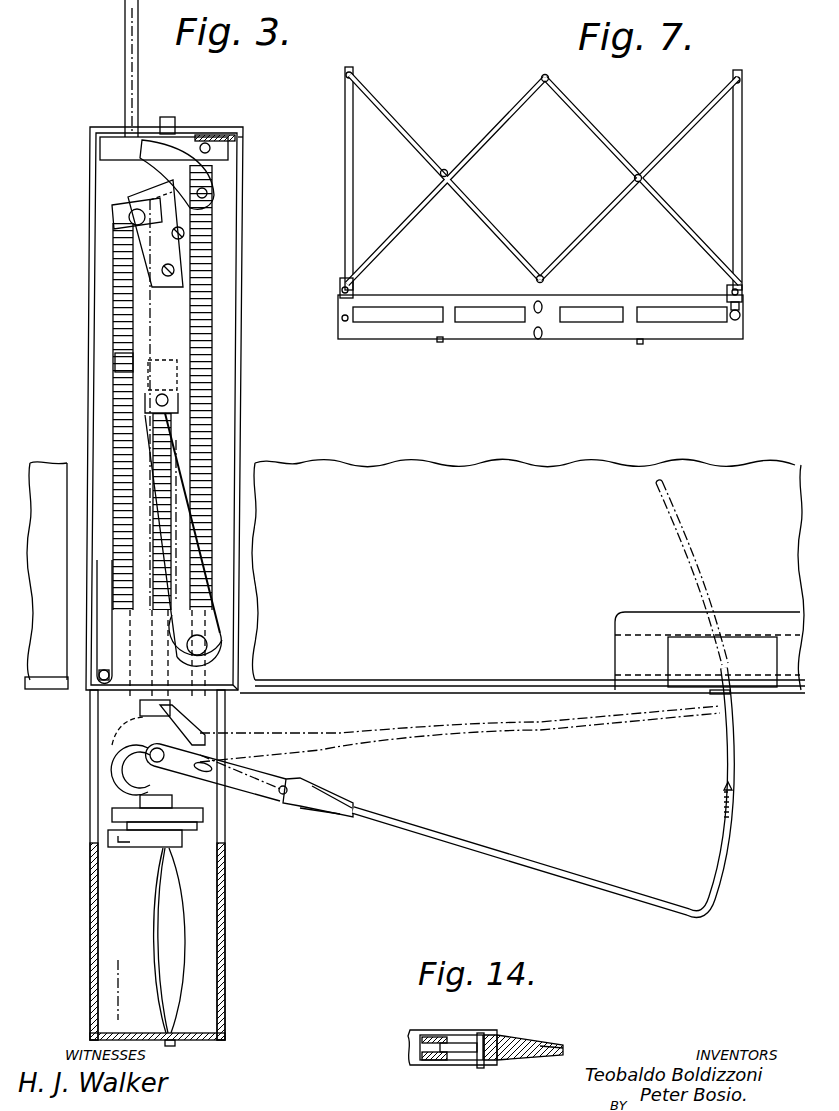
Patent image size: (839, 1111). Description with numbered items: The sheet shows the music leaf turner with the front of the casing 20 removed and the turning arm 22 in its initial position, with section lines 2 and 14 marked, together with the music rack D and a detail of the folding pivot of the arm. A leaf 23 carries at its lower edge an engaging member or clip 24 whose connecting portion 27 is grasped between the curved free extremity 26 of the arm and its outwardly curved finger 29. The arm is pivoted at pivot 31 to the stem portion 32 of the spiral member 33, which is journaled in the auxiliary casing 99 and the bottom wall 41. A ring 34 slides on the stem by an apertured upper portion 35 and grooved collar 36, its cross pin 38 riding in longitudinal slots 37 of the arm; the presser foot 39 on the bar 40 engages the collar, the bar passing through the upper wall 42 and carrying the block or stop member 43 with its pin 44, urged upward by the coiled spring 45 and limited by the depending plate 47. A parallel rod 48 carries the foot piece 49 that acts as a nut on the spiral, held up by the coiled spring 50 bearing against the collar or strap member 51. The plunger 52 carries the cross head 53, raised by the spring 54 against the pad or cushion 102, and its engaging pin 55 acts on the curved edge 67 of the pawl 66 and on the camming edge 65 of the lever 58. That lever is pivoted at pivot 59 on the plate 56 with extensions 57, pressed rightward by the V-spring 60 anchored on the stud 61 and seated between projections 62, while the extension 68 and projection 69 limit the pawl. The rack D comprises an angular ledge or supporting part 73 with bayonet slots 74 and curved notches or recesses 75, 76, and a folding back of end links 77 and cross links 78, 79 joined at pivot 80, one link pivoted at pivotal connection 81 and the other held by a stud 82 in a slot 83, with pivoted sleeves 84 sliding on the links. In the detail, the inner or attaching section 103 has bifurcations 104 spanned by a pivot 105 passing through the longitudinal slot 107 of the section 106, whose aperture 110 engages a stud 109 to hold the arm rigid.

In FIG. 3, the section line 2 is at (111, 519).
In FIG. 3, the section line 14 is at (283, 781).
In FIG. 3, the casing 20 is at (90, 300).
In FIG. 3, the turning arm 22 is at (490, 730).
In FIG. 14, the turning arm 22 is at (562, 1044).
In FIG. 3, the leaf 23 is at (510, 470).
In FIG. 3, the engaging member or clip 24 is at (610, 618).
In FIG. 3, the curved free extremity 26 is at (727, 672).
In FIG. 3, the connecting portion 27 is at (740, 630).
In FIG. 3, the finger 29 is at (735, 808).
In FIG. 3, the pivot 31 is at (170, 758).
In FIG. 3, the stem portion 32 is at (140, 708).
In FIG. 3, the spiral member 33 is at (170, 960).
In FIG. 3, the ring 34 is at (112, 776).
In FIG. 3, the apertured upper portion 35 is at (175, 718).
In FIG. 3, the grooved collar 36 is at (204, 816).
In FIG. 3, the longitudinal slots 37 is at (210, 765).
In FIG. 3, the cross pin 38 is at (205, 772).
In FIG. 3, the presser foot 39 is at (190, 830).
In FIG. 3, the bar 40 is at (172, 430).
In FIG. 3, the bottom wall 41 is at (236, 690).
In FIG. 3, the upper wall 42 is at (205, 136).
In FIG. 3, the block or stop member 43 is at (170, 400).
In FIG. 3, the pin 44 is at (157, 365).
In FIG. 3, the coiled spring 45 is at (175, 466).
In FIG. 3, the depending plate 47 is at (112, 732).
In FIG. 3, the rod 48 is at (130, 62).
In FIG. 3, the foot piece 49 is at (138, 847).
In FIG. 3, the coiled spring 50 is at (112, 445).
In FIG. 3, the collar or strap member 51 is at (112, 222).
In FIG. 3, the plunger 52 is at (180, 230).
In FIG. 3, the cross head 53 is at (178, 140).
In FIG. 3, the spring 54 is at (185, 238).
In FIG. 3, the engaging pin 55 is at (208, 146).
In FIG. 3, the plate 56 is at (218, 615).
In FIG. 3, the extensions 57 is at (222, 646).
In FIG. 3, the lever 58 is at (166, 405).
In FIG. 3, the pivot 59 is at (195, 636).
In FIG. 3, the V-spring 60 is at (96, 650).
In FIG. 3, the stud 61 is at (92, 690).
In FIG. 3, the projections 62 is at (115, 368).
In FIG. 3, the camming edge 65 is at (215, 320).
In FIG. 3, the pawl 66 is at (190, 190).
In FIG. 3, the curved edge 67 is at (216, 190).
In FIG. 3, the extension 68 is at (167, 117).
In FIG. 3, the projection 69 is at (174, 251).
In FIG. 7, the angular ledge or supporting part 73 is at (735, 336).
In FIG. 7, the bayonet slots 74 is at (542, 330).
In FIG. 3, the curved notch or recess 75 is at (737, 698).
In FIG. 7, the curved notch or recess 75 is at (640, 344).
In FIG. 7, the curved notch or recess 76 is at (440, 342).
In FIG. 7, the end links 77 is at (354, 180).
In FIG. 7, the cross links 78 is at (553, 255).
In FIG. 7, the cross links 79 is at (574, 112).
In FIG. 7, the pivot 80 is at (444, 170).
In FIG. 7, the pivotal connection 81 is at (341, 318).
In FIG. 7, the stud 82 is at (741, 316).
In FIG. 7, the slot 83 is at (740, 306).
In FIG. 7, the pivoted sleeves 84 is at (355, 290).
In FIG. 3, the auxiliary casing 99 is at (224, 922).
In FIG. 3, the pad or cushion 102 is at (243, 138).
In FIG. 3, the inner or attaching section 103 is at (288, 786).
In FIG. 14, the inner or attaching section 103 is at (414, 1026).
In FIG. 14, the bifurcations 104 is at (500, 1038).
In FIG. 3, the pivot 105 is at (308, 790).
In FIG. 14, the pivot 105 is at (479, 1060).
In FIG. 3, the section 106 is at (300, 812).
In FIG. 14, the section 106 is at (525, 1058).
In FIG. 14, the longitudinal slot 107 is at (455, 1043).
In FIG. 14, the stud 109 is at (418, 1042).
In FIG. 14, the aperture 110 is at (428, 1060).
In FIG. 7, the music rack D is at (746, 196).